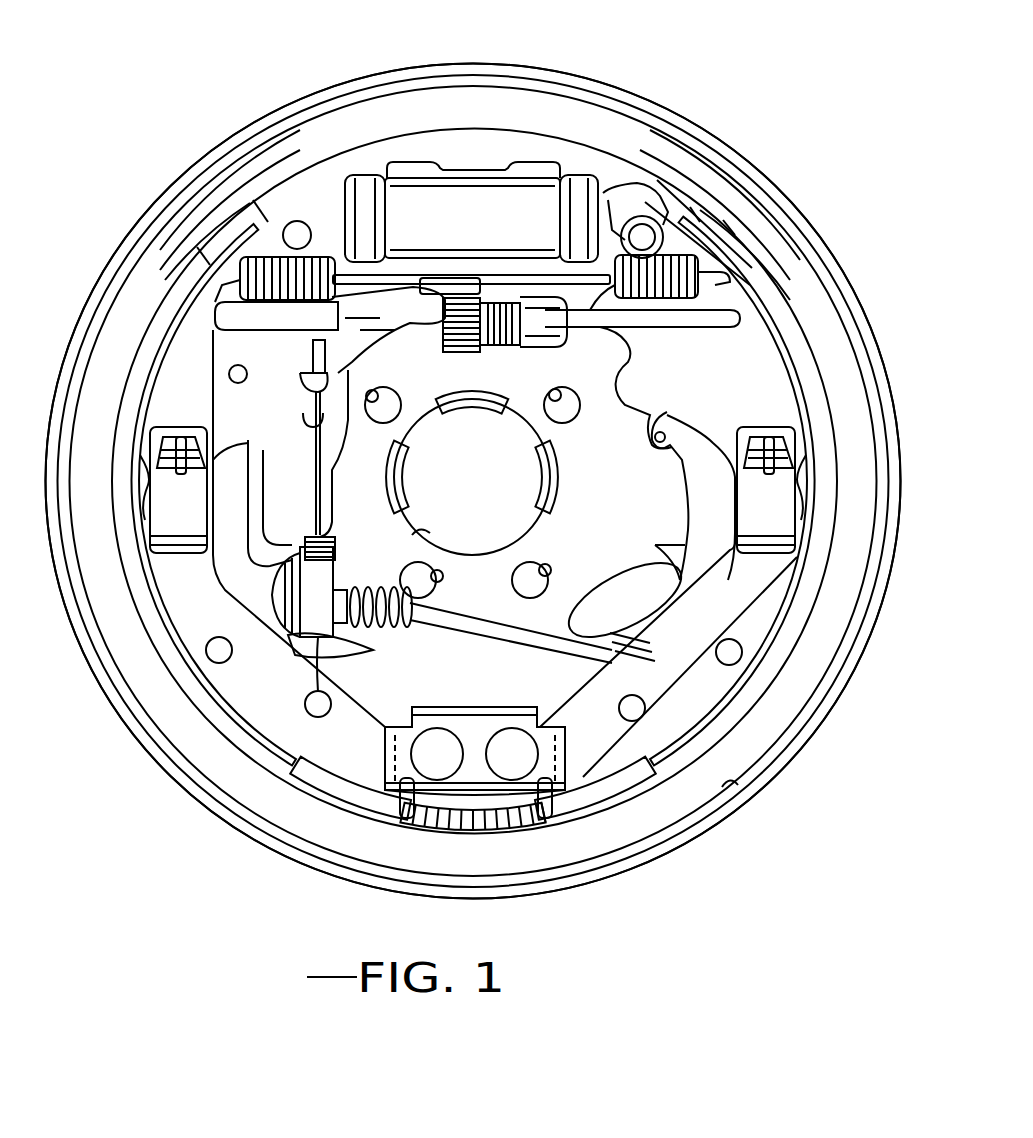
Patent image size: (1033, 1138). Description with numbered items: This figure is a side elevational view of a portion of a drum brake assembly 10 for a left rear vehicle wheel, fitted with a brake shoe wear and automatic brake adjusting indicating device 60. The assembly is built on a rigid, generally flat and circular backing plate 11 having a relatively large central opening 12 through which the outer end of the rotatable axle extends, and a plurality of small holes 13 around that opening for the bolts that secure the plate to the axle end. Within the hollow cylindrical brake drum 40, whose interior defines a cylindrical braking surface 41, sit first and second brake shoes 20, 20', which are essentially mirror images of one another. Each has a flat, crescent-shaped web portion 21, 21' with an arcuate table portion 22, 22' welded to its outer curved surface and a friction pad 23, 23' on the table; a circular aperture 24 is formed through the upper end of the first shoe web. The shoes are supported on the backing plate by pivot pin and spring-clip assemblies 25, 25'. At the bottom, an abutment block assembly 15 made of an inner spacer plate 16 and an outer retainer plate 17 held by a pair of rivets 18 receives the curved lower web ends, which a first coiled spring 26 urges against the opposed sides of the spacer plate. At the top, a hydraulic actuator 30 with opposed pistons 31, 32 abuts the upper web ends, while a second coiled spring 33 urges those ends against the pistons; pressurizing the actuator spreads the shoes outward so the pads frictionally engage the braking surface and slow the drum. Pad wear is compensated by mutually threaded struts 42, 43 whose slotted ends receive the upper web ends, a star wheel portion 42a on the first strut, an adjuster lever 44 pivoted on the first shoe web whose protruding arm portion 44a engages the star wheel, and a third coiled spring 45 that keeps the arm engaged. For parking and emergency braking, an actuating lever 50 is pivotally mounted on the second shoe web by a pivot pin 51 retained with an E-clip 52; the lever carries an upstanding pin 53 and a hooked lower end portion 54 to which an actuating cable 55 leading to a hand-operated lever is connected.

The drum brake assembly 10 is at (580, 58).
The backing plate 11 is at (582, 492).
The central opening 12 is at (410, 532).
The small holes 13 is at (372, 396).
The abutment block assembly 15 is at (455, 702).
The spacer plate 16 is at (528, 702).
The retainer plate 17 is at (430, 700).
The rivets 18 is at (462, 792).
The first brake shoe 20 is at (165, 232).
The second brake shoe 20' is at (766, 228).
The web portion 21 is at (268, 677).
The web portion 21' is at (680, 680).
The table portion 22 is at (230, 181).
The table portion 22' is at (725, 172).
The friction pad 23 is at (215, 210).
The friction pad 23' is at (716, 200).
The circular aperture 24 is at (290, 222).
The pivot pin and spring-clip assembly 25 is at (220, 453).
The pivot pin and spring-clip assembly 25' is at (759, 460).
The first coiled spring 26 is at (570, 800).
The hydraulic actuator 30 is at (452, 231).
The piston 31 is at (355, 178).
The piston 32 is at (590, 178).
The second coiled spring 33 is at (606, 300).
The brake drum 40 is at (680, 833).
The cylindrical braking surface 41 is at (740, 790).
The strut 42 is at (425, 350).
The star wheel portion 42a is at (464, 352).
The strut 43 is at (565, 342).
The adjuster lever 44 is at (338, 410).
The protruding arm portion 44a is at (452, 290).
The third coiled spring 45 is at (333, 478).
The actuating lever 50 is at (682, 501).
The pivot pin 51 is at (648, 220).
The E-clip 52 is at (612, 192).
The upstanding pin 53 is at (654, 438).
The hooked lower end portion 54 is at (625, 600).
The actuating cable 55 is at (505, 645).
The brake shoe wear and automatic brake adjusting indicating device 60 is at (262, 333).